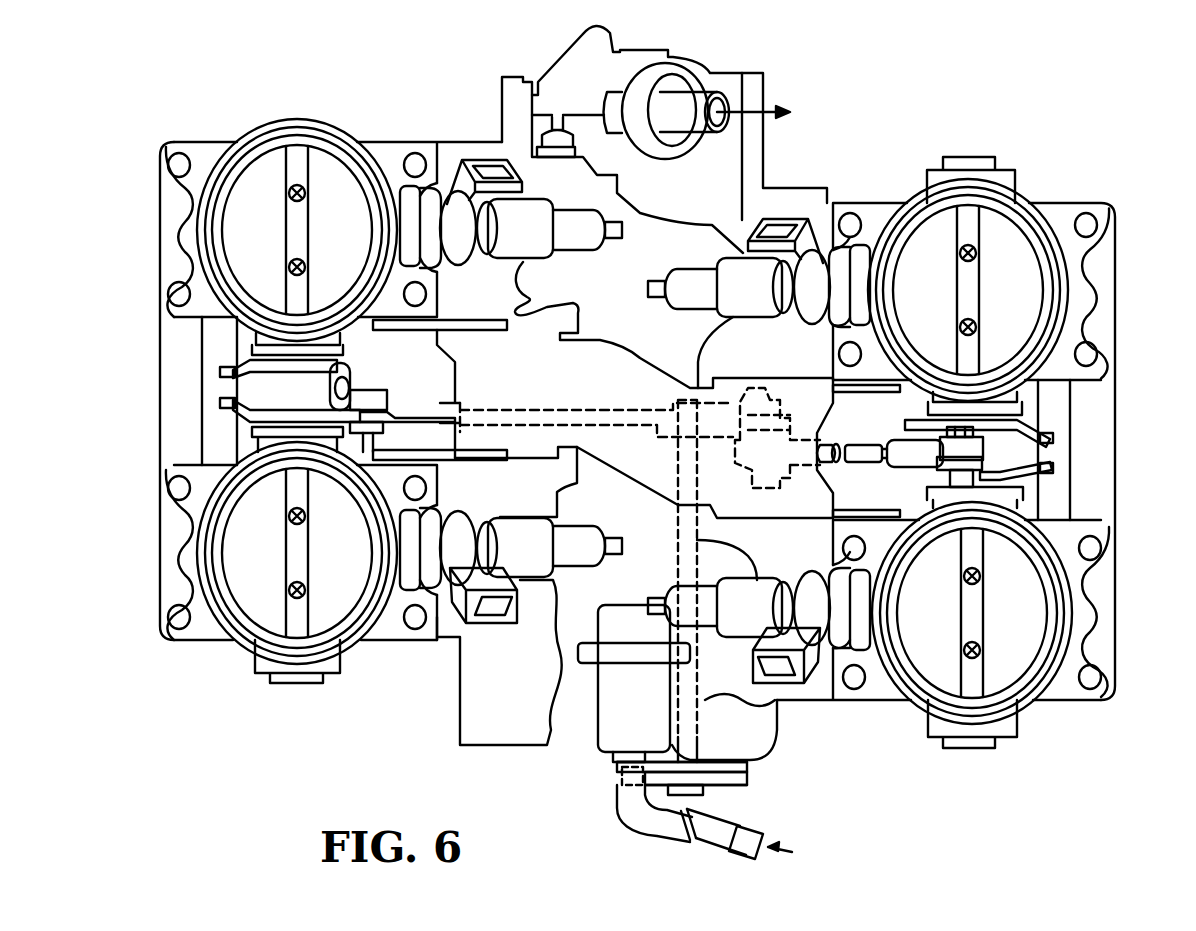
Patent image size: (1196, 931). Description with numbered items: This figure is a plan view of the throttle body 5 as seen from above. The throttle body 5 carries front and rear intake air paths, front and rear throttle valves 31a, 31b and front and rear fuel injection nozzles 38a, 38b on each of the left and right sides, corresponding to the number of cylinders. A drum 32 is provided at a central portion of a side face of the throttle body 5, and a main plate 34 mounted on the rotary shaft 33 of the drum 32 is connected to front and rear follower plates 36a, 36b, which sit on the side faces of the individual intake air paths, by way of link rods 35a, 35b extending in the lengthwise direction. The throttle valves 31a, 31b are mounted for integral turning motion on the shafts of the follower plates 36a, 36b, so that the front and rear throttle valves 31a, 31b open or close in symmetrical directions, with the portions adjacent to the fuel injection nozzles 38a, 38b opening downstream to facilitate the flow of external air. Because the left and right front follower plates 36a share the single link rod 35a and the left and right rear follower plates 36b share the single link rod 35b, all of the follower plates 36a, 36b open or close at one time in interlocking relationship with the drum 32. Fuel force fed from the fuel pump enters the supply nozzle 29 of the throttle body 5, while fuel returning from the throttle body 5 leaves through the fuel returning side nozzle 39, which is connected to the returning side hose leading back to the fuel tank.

The throttle body 5 is at (392, 107).
The supply nozzle 29 is at (723, 818).
The front throttle valve 31a is at (257, 182).
The rear throttle valve 31b is at (1005, 252).
The drum 32 is at (738, 786).
The rotary shaft 33 is at (692, 751).
The main plate 34 is at (735, 440).
The front link rod 35a is at (553, 410).
The rear link rod 35b is at (862, 440).
The front follower plate 36a is at (220, 405).
The rear follower plate 36b is at (1053, 467).
The front fuel injection nozzle 38a is at (573, 234).
The rear fuel injection nozzle 38b is at (689, 290).
The fuel returning side nozzle 39 is at (686, 100).